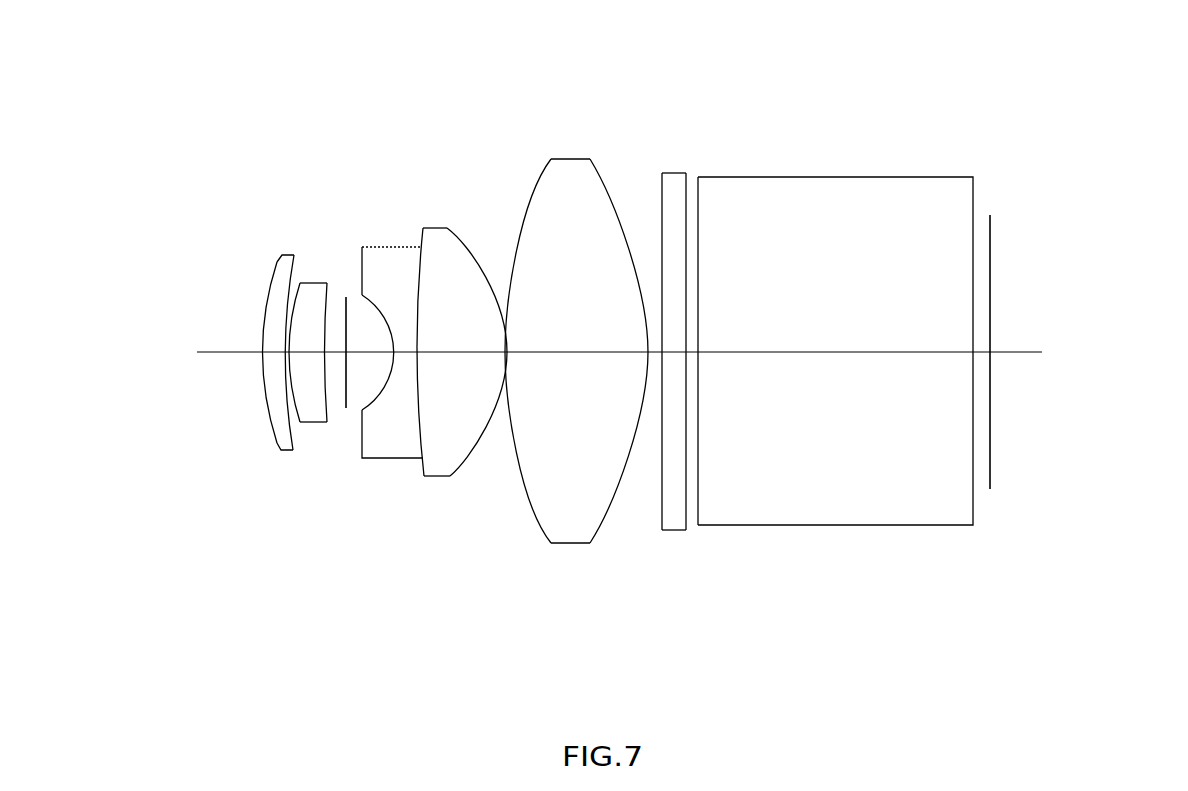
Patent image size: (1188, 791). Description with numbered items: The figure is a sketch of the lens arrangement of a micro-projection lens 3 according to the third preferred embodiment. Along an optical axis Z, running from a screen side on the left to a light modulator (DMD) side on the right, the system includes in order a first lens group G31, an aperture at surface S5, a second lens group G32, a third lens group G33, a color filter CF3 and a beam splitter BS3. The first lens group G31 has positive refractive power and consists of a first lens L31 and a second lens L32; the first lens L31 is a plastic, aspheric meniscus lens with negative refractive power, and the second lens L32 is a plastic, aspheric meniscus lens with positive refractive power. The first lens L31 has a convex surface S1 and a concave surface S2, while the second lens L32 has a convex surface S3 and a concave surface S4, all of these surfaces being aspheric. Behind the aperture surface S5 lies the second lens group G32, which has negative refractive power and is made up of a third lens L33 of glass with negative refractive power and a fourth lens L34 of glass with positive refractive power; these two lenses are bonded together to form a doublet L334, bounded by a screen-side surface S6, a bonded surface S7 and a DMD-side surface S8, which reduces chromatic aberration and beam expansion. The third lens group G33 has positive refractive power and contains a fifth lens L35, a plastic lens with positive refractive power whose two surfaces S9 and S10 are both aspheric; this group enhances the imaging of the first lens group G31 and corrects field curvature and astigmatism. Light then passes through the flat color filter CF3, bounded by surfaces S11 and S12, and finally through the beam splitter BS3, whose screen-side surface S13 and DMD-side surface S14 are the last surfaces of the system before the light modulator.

The micro-projection lens 3 is at (1131, 97).
The optical axis Z is at (223, 354).
The first lens group G31 is at (327, 610).
The first lens L31 is at (287, 452).
The second lens L32 is at (316, 424).
The convex surface of first lens S1 is at (268, 274).
The concave surface of first lens S2 is at (293, 256).
The convex surface of second lens S3 is at (302, 283).
The concave surface of second lens S4 is at (328, 296).
The aperture surface S5 is at (346, 297).
The second lens group G32 is at (453, 660).
The doublet L334 is at (463, 610).
The third lens L33 is at (393, 460).
The fourth lens L34 is at (437, 478).
The first surface of doublet S6 is at (377, 303).
The bonded surface of doublet S7 is at (416, 278).
The last surface of doublet S8 is at (484, 276).
The third lens group G33 is at (603, 660).
The fifth lens L35 is at (568, 545).
The first surface of fifth lens S9 is at (540, 183).
The second surface of fifth lens S10 is at (603, 177).
The color filter CF3 is at (673, 531).
The first surface of color filter S11 is at (660, 197).
The second surface of color filter S12 is at (690, 182).
The beam splitter BS3 is at (835, 526).
The first surface of beam splitter S13 is at (697, 210).
The last surface of beam splitter S14 is at (975, 202).